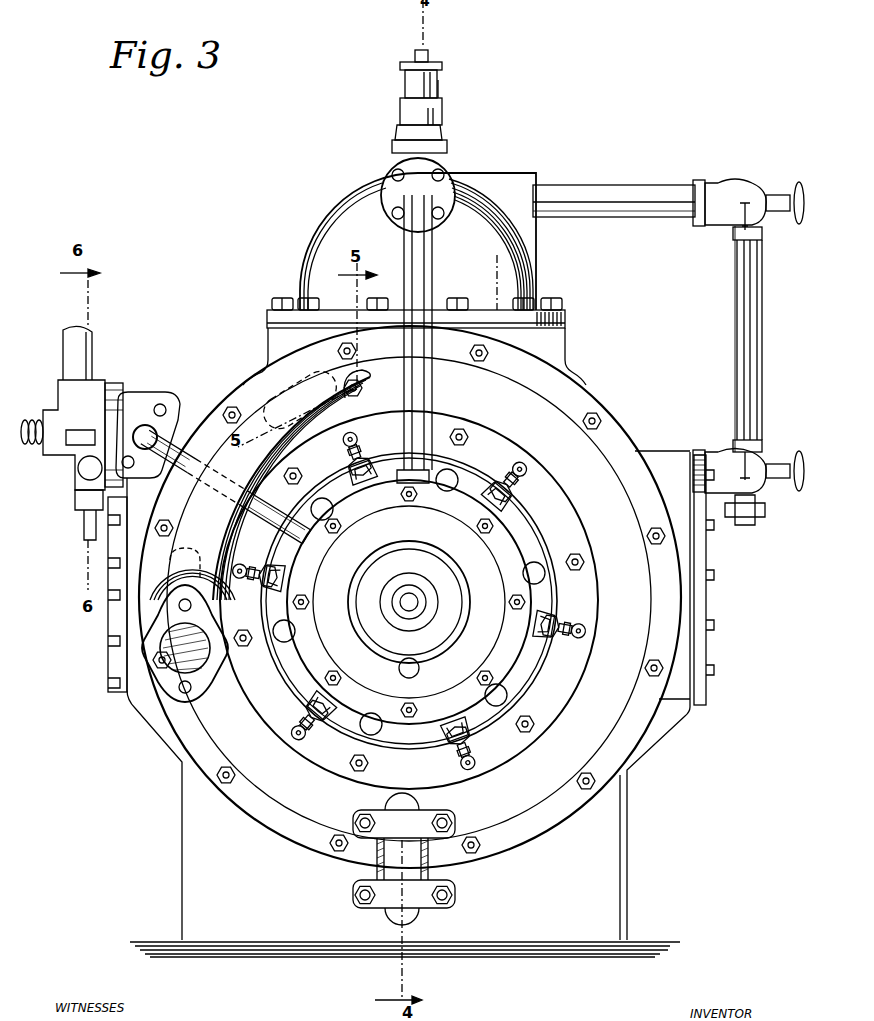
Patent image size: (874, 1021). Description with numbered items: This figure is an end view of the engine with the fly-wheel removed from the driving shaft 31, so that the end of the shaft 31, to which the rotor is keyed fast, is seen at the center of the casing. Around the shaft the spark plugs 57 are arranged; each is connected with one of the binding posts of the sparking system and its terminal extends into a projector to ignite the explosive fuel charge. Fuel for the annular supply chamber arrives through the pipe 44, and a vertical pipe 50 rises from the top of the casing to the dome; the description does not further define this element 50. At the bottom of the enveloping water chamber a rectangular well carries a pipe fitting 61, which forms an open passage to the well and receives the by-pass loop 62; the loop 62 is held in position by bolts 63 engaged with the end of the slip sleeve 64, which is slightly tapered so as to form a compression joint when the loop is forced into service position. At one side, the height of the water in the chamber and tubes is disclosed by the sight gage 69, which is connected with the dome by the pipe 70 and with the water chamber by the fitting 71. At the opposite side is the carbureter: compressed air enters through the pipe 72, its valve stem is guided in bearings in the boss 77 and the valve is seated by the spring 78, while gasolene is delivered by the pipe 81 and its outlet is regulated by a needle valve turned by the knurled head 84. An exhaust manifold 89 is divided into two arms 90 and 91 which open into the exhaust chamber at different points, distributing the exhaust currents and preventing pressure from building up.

The driving shaft 31 is at (405, 606).
The pipe 44 is at (188, 460).
The steam supply pipe 50 is at (420, 398).
The spark plugs 57 is at (510, 490).
The pipe fitting 61 is at (404, 912).
The by-pass loop 62 is at (410, 868).
The bolts 63 is at (366, 820).
The slip sleeve 64 is at (413, 800).
The sight gage 69 is at (736, 407).
The pipe 70 is at (608, 197).
The fitting 71 is at (717, 462).
The pipe 72 is at (75, 357).
The boss 77 is at (77, 438).
The spring 78 is at (28, 427).
The pipe 81 is at (86, 520).
The knurled head 84 is at (84, 471).
The exhaust manifold 89 is at (203, 655).
The arm 90 is at (317, 413).
The arm 91 is at (217, 585).